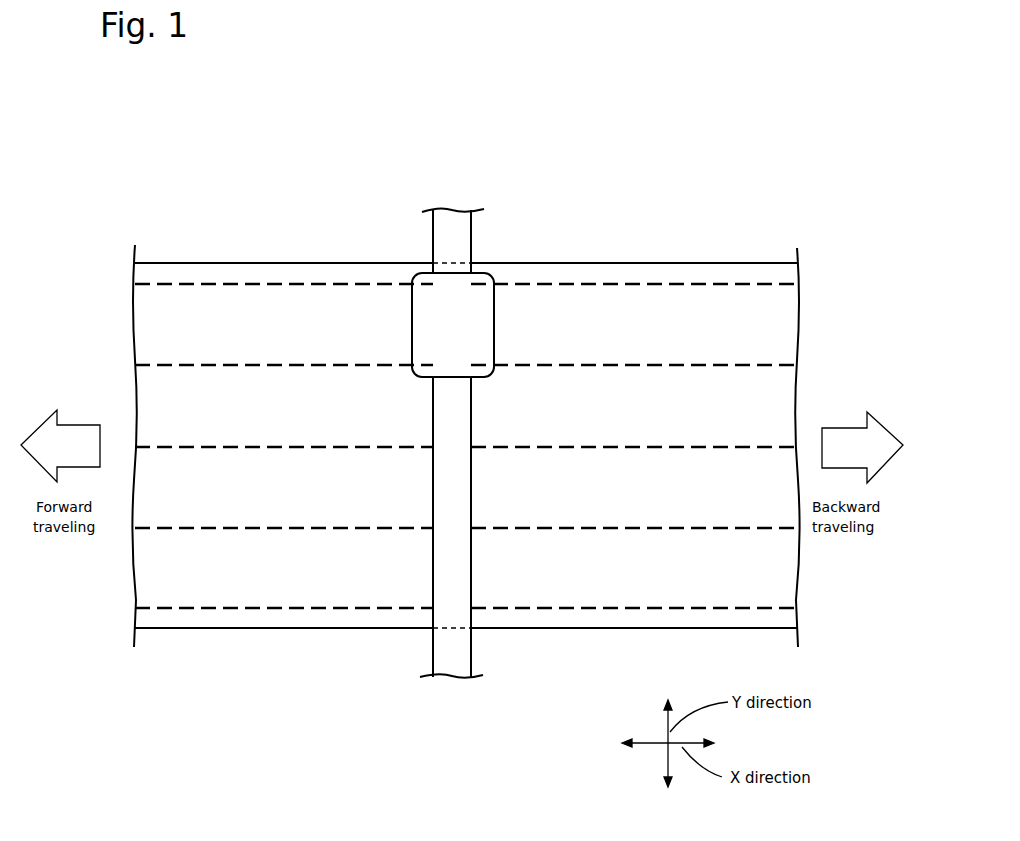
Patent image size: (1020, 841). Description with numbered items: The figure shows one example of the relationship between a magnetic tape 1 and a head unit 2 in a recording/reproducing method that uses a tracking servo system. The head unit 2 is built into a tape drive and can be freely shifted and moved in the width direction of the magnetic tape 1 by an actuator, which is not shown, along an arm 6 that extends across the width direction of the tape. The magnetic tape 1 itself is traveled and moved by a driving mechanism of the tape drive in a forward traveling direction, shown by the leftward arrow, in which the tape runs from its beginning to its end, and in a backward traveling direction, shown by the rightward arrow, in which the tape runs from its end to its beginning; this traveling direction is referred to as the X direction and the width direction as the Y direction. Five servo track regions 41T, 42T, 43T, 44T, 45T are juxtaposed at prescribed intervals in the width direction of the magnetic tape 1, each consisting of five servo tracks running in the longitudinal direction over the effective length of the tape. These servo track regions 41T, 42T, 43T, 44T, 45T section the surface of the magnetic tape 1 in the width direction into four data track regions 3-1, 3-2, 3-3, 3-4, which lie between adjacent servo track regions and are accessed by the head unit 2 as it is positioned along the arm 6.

The magnetic tape 1 is at (680, 246).
The head unit 2 is at (483, 307).
The data track region 3-1 is at (466, 324).
The data track region 3-2 is at (466, 406).
The data track region 3-3 is at (466, 487).
The data track region 3-4 is at (466, 568).
The servo track region 41T is at (297, 281).
The servo track region 42T is at (299, 362).
The servo track region 43T is at (297, 444).
The servo track region 44T is at (298, 525).
The servo track region 45T is at (298, 605).
The arm 6 is at (465, 650).